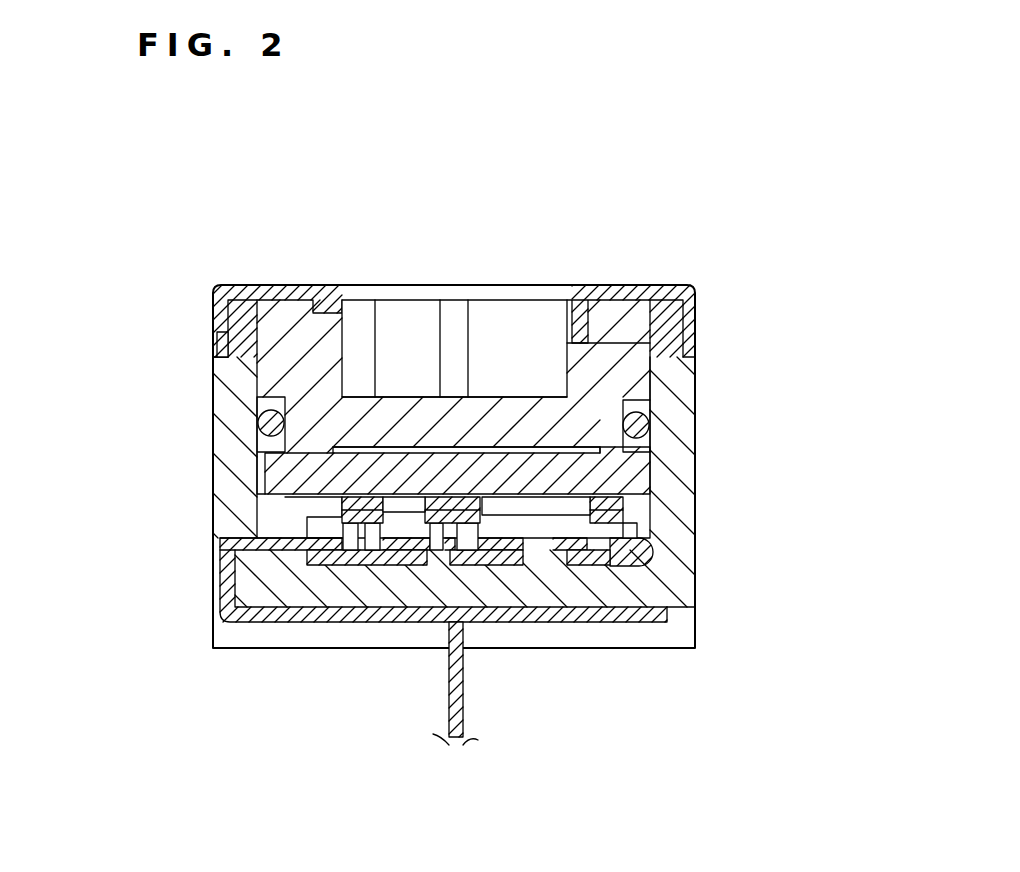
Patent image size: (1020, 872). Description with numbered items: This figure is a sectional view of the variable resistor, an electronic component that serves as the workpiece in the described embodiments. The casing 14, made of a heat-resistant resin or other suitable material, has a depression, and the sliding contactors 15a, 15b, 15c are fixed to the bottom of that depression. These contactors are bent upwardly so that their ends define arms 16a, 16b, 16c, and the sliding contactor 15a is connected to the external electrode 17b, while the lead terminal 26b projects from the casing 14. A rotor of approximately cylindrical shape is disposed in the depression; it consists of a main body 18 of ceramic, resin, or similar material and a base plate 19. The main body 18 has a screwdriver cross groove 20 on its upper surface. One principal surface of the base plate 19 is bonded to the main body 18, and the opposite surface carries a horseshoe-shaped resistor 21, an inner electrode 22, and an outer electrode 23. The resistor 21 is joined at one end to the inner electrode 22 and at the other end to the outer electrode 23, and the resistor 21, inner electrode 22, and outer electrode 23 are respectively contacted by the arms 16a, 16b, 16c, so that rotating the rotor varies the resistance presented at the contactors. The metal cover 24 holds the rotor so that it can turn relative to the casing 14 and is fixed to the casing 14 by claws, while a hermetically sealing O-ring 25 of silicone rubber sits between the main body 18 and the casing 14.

The casing 14 is at (675, 453).
The sliding contactor 15a is at (350, 560).
The sliding contactor 15b is at (565, 560).
The sliding contactor 15c is at (650, 552).
The arm 16a is at (303, 555).
The arm 16b is at (583, 560).
The arm 16c is at (628, 500).
The external electrode 17b is at (225, 585).
The main body 18 is at (600, 355).
The base plate 19 is at (285, 470).
The screwdriver cross groove 20 is at (453, 313).
The horseshoe-shaped resistor 21 is at (362, 497).
The inner electrode 22 is at (455, 500).
The outer electrode 23 is at (640, 398).
The metal cover 24 is at (272, 290).
The O-ring 25 is at (262, 418).
The lead terminal 26b is at (462, 717).